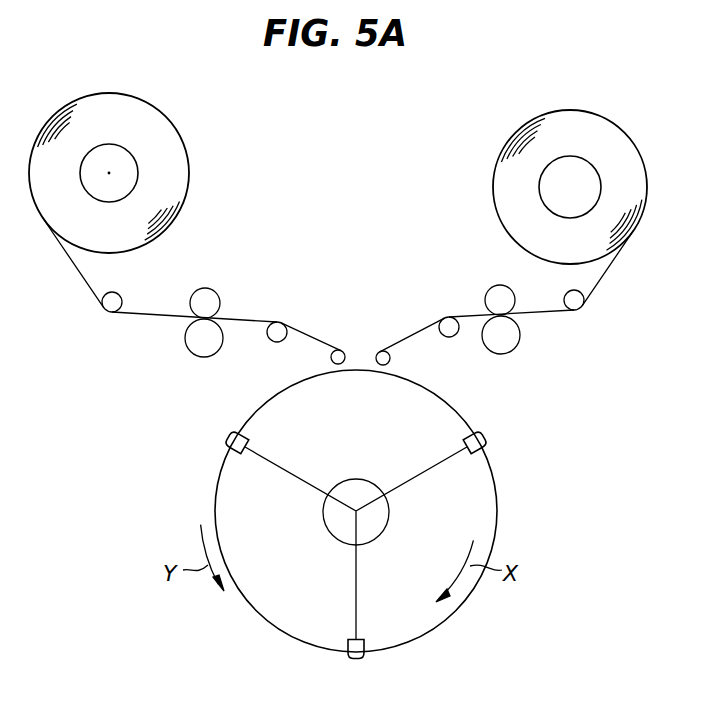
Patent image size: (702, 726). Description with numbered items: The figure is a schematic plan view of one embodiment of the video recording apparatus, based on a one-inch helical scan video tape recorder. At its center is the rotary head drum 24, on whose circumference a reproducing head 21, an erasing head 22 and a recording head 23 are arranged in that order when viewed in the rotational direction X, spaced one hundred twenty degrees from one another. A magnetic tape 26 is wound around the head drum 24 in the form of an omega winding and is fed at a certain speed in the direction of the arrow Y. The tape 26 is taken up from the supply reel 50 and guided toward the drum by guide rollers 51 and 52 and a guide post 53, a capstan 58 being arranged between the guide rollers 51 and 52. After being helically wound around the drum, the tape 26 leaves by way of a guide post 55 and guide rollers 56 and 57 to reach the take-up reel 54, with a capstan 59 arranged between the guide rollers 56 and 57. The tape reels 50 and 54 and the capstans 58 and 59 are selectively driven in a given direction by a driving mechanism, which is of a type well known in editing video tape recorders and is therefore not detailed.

The supply reel 50 is at (180, 137).
The guide roller 57 is at (625, 133).
The magnetic tape 26 is at (148, 317).
The guide roller 51 is at (120, 296).
The capstan 58 is at (215, 292).
The guide roller 52 is at (267, 343).
The guide post 53 is at (333, 358).
The capstan 59 is at (487, 290).
The guide roller 56 is at (568, 297).
The guide post 55 is at (458, 337).
The take-up reel 54 is at (388, 358).
The head drum 24 is at (497, 506).
The reproducing head 21 is at (358, 660).
The erasing head 22 is at (483, 440).
The recording head 23 is at (232, 436).